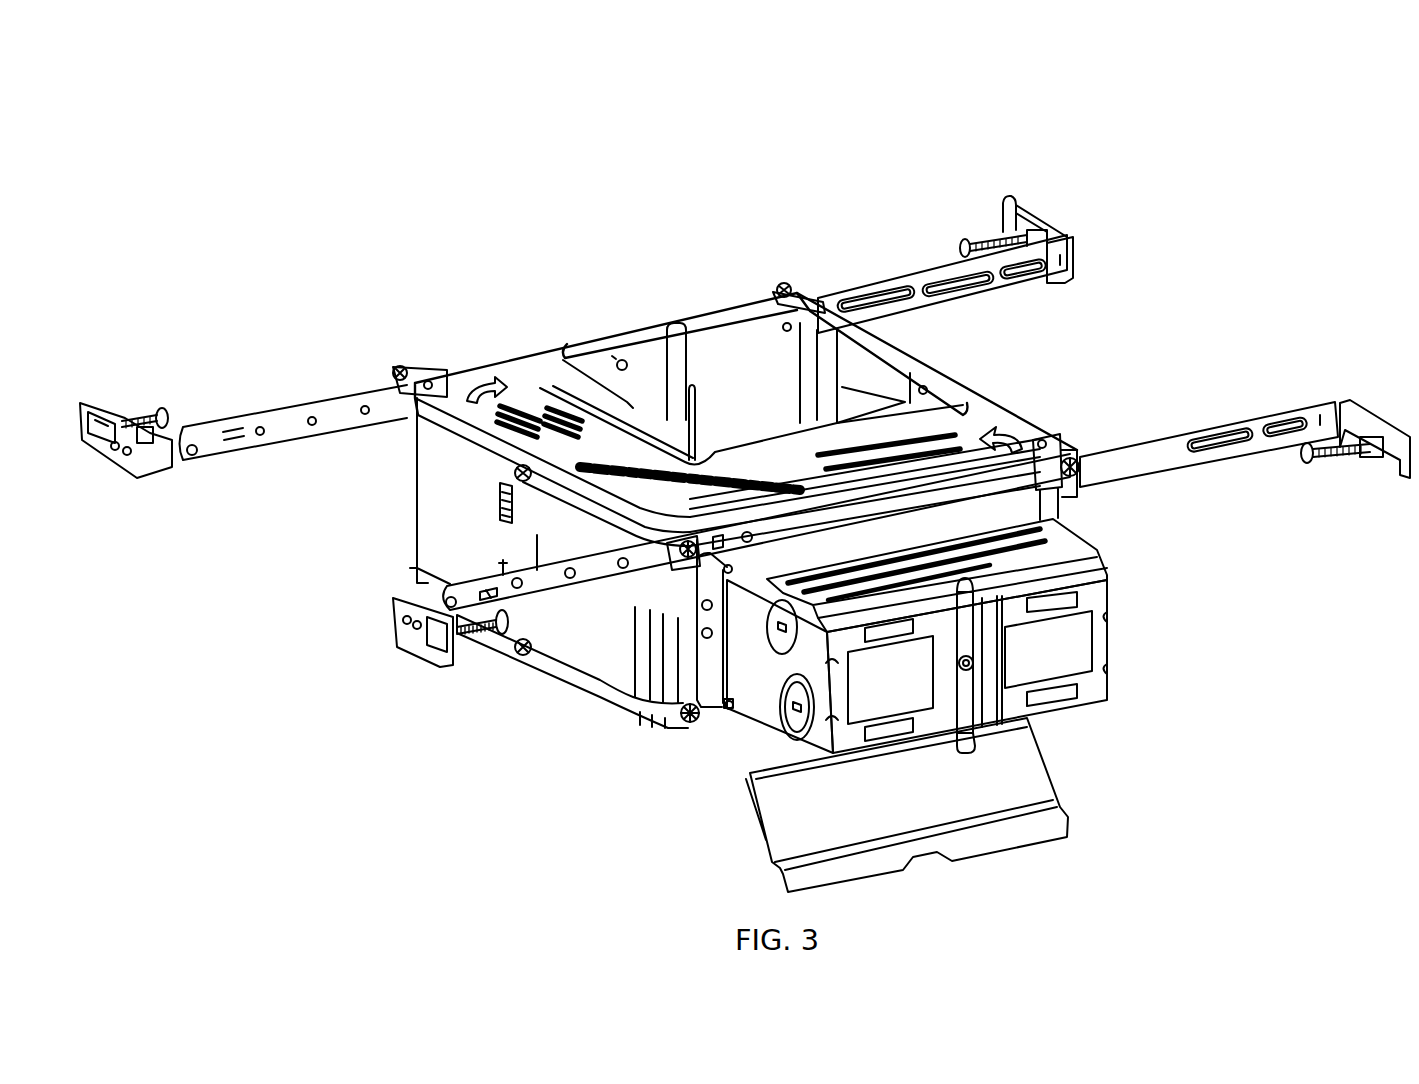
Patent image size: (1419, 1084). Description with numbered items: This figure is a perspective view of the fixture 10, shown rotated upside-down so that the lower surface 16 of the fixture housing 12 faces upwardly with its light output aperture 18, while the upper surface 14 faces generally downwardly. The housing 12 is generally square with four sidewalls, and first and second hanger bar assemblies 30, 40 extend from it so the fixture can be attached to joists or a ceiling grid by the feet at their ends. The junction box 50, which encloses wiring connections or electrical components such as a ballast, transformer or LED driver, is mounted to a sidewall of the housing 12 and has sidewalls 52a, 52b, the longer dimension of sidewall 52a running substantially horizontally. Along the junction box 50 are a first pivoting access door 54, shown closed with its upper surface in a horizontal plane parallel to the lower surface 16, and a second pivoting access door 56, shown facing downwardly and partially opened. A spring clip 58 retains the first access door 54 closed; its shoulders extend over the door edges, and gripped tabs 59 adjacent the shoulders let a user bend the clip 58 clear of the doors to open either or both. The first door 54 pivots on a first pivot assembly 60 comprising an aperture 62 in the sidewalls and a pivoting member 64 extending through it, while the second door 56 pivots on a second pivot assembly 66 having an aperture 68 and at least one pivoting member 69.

The fixture 10 is at (574, 164).
The fixture housing 12 is at (960, 356).
The upper surface 14 is at (597, 713).
The lower surface 16 is at (523, 382).
The aperture 18 is at (748, 360).
The first hanger bar assembly 30 is at (1265, 397).
The second hanger bar assembly 40 is at (1103, 231).
The junction box 50 is at (966, 694).
The sidewall 52a is at (757, 712).
The sidewall 52b is at (1090, 687).
The first pivoting access door 54 is at (1078, 530).
The second pivoting access door 56 is at (1080, 810).
The spring clip 58 is at (973, 703).
The gripped tabs 59 is at (1108, 573).
The first pivot assembly 60 is at (727, 594).
The aperture 62 is at (730, 571).
The pivoting member 64 is at (724, 579).
The second pivot assembly 66 is at (702, 719).
The aperture 68 is at (746, 708).
The pivoting member 69 is at (728, 702).